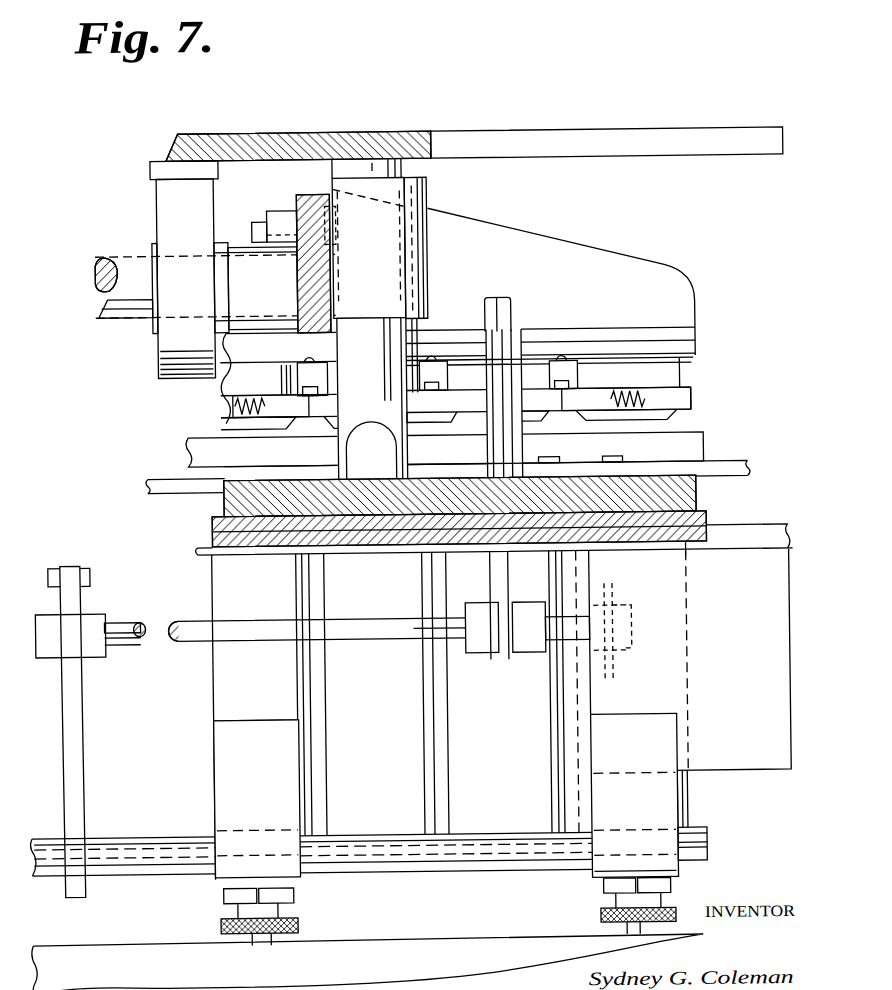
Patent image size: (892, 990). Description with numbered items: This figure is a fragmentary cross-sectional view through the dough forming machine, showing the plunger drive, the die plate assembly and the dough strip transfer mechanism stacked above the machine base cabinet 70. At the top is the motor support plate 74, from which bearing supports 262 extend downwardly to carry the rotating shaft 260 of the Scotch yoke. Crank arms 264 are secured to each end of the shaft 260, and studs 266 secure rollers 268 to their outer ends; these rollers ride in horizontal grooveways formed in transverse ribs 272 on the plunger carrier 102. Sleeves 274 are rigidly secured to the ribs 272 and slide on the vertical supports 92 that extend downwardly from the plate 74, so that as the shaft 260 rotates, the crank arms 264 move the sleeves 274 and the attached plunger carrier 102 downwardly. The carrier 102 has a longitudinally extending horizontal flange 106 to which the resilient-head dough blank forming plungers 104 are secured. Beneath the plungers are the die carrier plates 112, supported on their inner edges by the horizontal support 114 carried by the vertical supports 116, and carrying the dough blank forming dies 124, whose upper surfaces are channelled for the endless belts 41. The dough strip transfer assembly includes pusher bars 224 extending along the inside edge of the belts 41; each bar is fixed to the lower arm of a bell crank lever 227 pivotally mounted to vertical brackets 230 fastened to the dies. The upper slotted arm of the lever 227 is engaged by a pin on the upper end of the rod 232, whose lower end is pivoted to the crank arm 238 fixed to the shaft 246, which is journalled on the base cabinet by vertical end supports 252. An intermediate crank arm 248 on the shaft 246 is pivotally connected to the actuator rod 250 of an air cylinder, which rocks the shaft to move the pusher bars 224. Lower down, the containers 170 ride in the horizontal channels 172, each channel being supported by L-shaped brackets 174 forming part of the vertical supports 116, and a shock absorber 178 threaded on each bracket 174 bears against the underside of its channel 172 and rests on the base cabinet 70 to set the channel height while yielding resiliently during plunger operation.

The motor support plate 74 is at (416, 133).
The bearing supports 262 is at (168, 215).
The shaft 260 is at (120, 269).
The crank arms 264 is at (271, 270).
The studs 266 is at (278, 260).
The rollers 268 is at (328, 200).
The transverse ribs 272 is at (312, 328).
The vertical supports 92 is at (388, 410).
The sleeves 274 is at (431, 202).
The plunger carrier 102 is at (650, 272).
The bell crank lever 227 is at (514, 304).
The vertical brackets 230 is at (524, 340).
The horizontal flange 106 is at (699, 344).
The dough blank forming plungers 104 is at (670, 382).
The pusher bars 224 is at (697, 451).
The endless belts 41 is at (180, 476).
The dough blank forming dies 124 is at (224, 504).
The die carrier plates 112 is at (213, 526).
The horizontal support 114 is at (200, 556).
The vertical supports 116 is at (213, 696).
The containers 170 is at (403, 783).
The L-shaped brackets 174 is at (277, 811).
The shaft 246 is at (396, 637).
The crank arm 238 is at (529, 644).
The rod 232 is at (500, 562).
The vertical end supports 252 is at (614, 670).
The intermediate crank arm 248 is at (86, 598).
The actuator rod 250 is at (74, 803).
The channels 172 is at (705, 836).
The shock absorber 178 is at (290, 907).
The machine base cabinet 70 is at (305, 984).